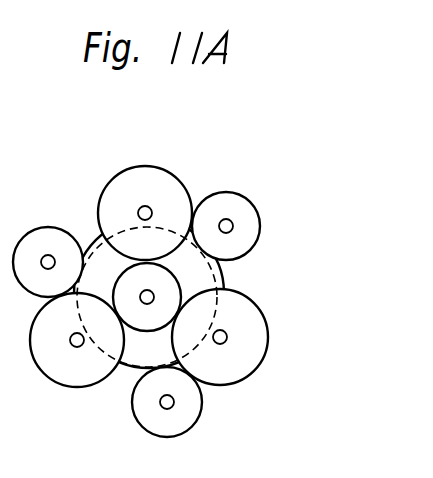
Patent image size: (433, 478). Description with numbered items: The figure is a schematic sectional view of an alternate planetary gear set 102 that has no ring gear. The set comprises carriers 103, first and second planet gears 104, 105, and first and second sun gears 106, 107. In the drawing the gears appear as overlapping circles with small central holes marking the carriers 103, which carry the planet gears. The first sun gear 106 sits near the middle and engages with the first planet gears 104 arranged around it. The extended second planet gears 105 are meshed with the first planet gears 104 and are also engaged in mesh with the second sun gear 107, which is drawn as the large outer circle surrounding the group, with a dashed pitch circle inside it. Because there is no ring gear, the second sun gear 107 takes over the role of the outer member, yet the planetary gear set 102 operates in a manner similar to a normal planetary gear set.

The planetary gear set 102 is at (265, 353).
The carriers 103 is at (150, 289).
The first planet gears 104 is at (145, 166).
The second planet gears 105 is at (275, 226).
The first sun gear 106 is at (177, 279).
The second sun gear 107 is at (219, 284).